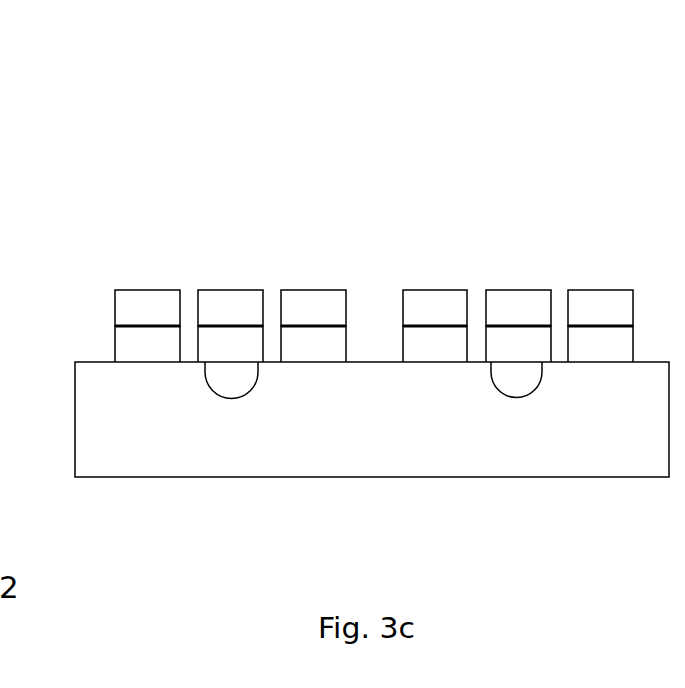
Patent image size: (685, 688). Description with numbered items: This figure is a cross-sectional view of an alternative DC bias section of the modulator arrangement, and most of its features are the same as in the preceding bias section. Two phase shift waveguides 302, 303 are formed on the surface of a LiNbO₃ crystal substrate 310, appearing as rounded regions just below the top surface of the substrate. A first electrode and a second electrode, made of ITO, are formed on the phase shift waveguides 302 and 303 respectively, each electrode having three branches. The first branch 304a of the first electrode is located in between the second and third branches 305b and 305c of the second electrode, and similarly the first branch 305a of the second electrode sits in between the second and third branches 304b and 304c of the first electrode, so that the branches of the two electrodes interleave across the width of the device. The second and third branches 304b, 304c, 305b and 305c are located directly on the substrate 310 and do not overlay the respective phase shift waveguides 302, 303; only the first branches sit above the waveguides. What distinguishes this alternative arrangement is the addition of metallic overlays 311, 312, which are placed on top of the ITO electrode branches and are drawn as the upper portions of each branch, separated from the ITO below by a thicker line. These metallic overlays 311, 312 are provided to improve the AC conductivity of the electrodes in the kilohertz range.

The phase shift waveguide 302 is at (533, 395).
The phase shift waveguide 303 is at (220, 393).
The first branch of the first electrode 304a is at (541, 241).
The second branch of the first electrode 304b is at (115, 339).
The third branch of the first electrode 304c is at (345, 235).
The first branch of the second electrode 305a is at (255, 260).
The second branch of the second electrode 305b is at (607, 210).
The third branch of the second electrode 305c is at (457, 215).
The LiNbO₃ crystal substrate 310 is at (595, 477).
The metallic overlay 311 is at (220, 290).
The metallic overlay 312 is at (138, 290).